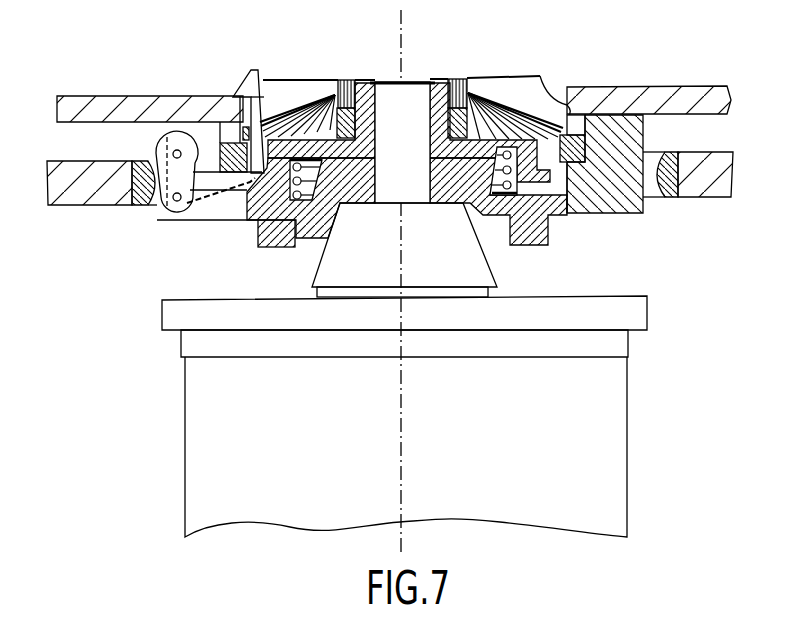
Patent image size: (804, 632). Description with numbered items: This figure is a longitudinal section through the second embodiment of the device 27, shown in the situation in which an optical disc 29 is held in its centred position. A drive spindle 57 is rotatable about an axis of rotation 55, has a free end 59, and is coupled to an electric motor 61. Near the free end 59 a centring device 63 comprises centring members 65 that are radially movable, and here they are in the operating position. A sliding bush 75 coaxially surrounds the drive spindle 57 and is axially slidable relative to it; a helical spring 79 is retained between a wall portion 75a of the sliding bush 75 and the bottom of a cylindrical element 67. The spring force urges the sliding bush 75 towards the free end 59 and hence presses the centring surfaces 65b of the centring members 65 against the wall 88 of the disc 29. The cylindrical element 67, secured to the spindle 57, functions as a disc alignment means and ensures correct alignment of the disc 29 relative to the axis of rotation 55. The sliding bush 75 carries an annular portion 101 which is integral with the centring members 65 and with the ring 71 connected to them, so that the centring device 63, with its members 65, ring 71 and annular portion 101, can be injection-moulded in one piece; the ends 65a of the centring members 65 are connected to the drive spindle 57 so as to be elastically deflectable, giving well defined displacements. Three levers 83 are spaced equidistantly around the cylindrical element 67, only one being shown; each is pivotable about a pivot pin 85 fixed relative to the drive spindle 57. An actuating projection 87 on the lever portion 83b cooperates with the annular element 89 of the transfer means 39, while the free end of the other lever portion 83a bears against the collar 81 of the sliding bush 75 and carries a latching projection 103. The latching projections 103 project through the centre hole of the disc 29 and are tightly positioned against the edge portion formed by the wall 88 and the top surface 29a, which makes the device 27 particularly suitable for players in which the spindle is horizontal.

The device 27 is at (604, 242).
The optical disc 29 is at (697, 86).
The top surface of the disc 29a is at (176, 96).
The transfer means 39 is at (78, 193).
The axis of rotation 55 is at (404, 48).
The drive spindle 57 is at (387, 193).
The free end of the drive spindle 59 is at (411, 82).
The electric motor 61 is at (470, 272).
The centring device 63 is at (356, 66).
The centring members 65 is at (562, 90).
The end of the centring member 65a is at (587, 113).
The centring surfaces 65b is at (543, 75).
The cylindrical element 67 is at (626, 139).
The ring 71 is at (577, 165).
The sliding bush 75 is at (450, 95).
The wall portion of the sliding bush 75a is at (470, 92).
The helical spring 79 is at (282, 240).
The collar of the sliding bush 81 is at (248, 194).
The levers 83 is at (177, 205).
The lever portion 83a is at (218, 182).
The lever portion 83b is at (158, 149).
The pivot pins 85 is at (173, 199).
The actuating projections 87 is at (168, 165).
The wall of the disc 88 is at (231, 96).
The annular element 89 is at (133, 184).
The annular portion 101 is at (343, 92).
The latching projection 103 is at (253, 92).